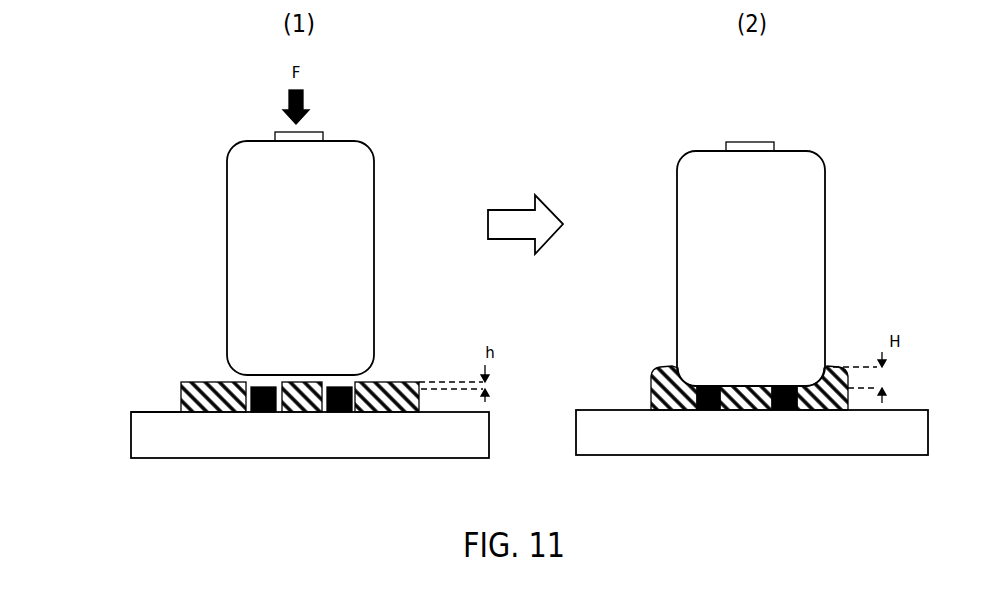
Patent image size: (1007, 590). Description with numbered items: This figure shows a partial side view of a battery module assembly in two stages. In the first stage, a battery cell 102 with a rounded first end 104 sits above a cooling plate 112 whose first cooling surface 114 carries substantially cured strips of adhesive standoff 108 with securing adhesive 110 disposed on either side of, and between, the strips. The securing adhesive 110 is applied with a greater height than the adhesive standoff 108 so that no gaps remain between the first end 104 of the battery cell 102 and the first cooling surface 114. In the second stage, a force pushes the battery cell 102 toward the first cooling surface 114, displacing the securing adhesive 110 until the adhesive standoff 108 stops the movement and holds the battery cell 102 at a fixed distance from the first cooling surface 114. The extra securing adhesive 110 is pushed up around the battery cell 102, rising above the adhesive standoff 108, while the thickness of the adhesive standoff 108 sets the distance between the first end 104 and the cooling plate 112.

The battery cell 102 is at (342, 195).
The first end 104 is at (380, 372).
The adhesive standoff 108 is at (263, 412).
The securing adhesive 110 is at (215, 380).
The cooling plate 112 is at (122, 432).
The first cooling surface 114 is at (148, 385).